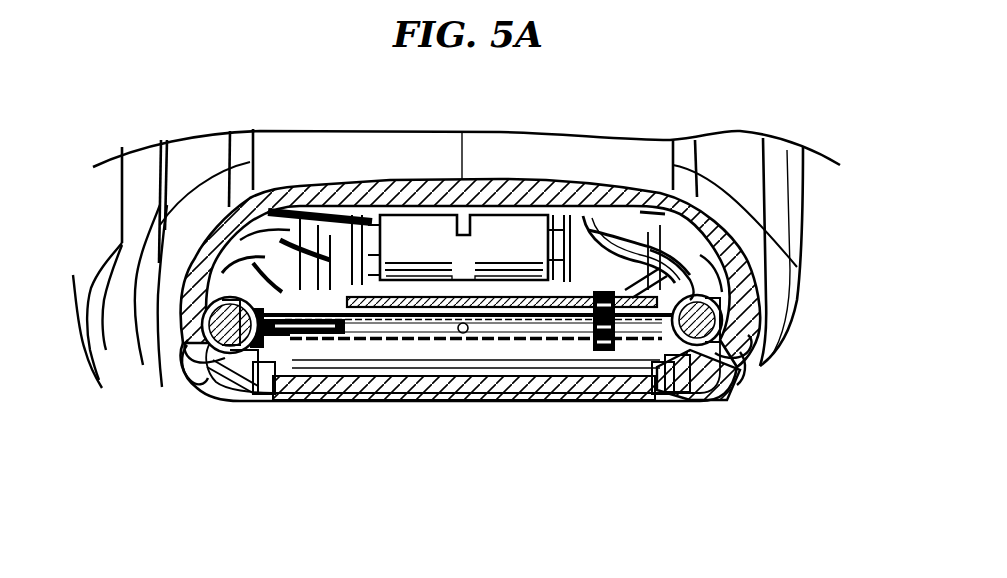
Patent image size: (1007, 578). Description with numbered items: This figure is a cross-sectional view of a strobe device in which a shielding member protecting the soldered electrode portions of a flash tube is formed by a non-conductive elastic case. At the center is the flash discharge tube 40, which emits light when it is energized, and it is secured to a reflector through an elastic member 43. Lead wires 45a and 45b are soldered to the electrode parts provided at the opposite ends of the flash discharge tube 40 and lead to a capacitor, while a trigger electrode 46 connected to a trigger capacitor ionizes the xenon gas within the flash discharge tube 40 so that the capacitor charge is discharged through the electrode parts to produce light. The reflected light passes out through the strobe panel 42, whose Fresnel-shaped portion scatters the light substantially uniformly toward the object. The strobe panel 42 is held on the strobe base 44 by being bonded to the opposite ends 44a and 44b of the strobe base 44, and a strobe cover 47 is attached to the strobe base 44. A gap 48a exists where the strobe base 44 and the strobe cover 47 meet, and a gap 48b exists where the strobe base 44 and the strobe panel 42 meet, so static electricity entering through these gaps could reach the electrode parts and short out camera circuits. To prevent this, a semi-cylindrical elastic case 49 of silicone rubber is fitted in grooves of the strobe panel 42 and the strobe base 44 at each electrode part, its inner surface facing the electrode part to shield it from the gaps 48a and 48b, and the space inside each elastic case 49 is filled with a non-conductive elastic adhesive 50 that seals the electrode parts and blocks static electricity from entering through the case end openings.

The flash discharge tube 40 is at (403, 330).
The strobe panel 42 is at (508, 403).
The elastic member 43 is at (437, 300).
The strobe base 44 is at (717, 403).
The end of strobe base 44a is at (672, 387).
The end of strobe base 44b is at (250, 400).
The lead wire 45a is at (688, 290).
The lead wire 45b is at (250, 282).
The trigger electrode 46 is at (600, 290).
The strobe cover 47 is at (787, 338).
The gap 48a is at (190, 373).
The gap 48b is at (257, 397).
The elastic case 49 is at (190, 352).
The non-conductive elastic adhesive 50 is at (220, 313).